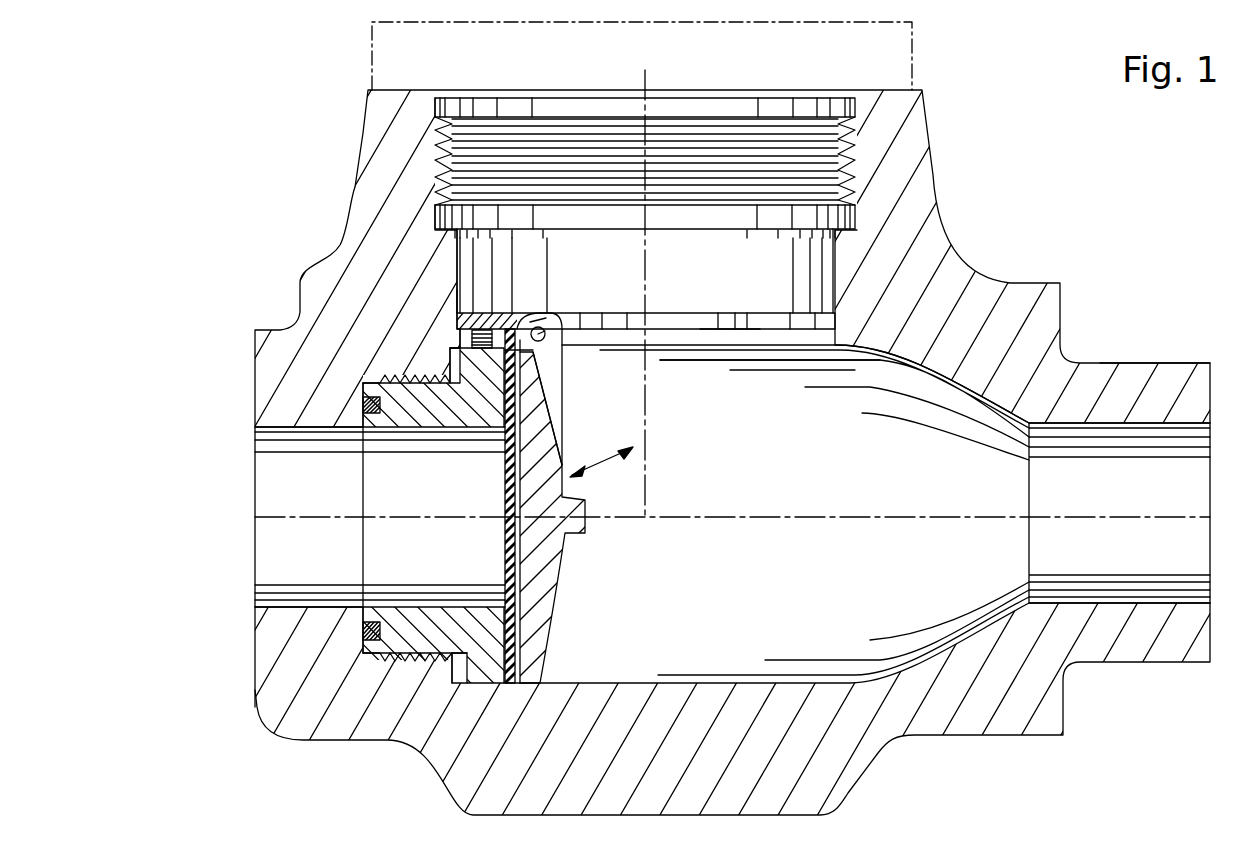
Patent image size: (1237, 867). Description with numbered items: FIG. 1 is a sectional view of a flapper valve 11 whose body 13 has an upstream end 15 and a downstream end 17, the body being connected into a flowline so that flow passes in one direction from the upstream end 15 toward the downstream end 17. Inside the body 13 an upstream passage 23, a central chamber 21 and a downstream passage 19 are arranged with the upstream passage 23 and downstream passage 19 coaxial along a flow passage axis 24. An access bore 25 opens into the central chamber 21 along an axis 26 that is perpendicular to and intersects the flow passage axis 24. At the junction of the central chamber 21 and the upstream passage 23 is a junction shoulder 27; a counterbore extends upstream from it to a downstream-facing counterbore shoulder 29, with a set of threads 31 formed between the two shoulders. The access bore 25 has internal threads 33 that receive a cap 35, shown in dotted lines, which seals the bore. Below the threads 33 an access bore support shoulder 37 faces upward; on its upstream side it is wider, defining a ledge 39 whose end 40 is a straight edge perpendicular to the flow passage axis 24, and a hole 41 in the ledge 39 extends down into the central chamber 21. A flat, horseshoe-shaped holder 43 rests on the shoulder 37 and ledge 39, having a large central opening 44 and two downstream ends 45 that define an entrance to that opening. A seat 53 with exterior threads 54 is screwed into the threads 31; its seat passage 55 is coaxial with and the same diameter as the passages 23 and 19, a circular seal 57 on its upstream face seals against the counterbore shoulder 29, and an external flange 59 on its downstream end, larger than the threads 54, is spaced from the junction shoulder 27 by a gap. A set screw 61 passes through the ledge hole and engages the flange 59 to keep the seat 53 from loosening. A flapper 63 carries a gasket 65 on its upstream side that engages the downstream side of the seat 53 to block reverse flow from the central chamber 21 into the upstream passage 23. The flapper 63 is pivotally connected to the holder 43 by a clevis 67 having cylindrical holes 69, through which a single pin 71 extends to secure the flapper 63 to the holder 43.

The flapper valve 11 is at (1030, 208).
The body 13 is at (962, 280).
The upstream end 15 is at (257, 712).
The downstream end 17 is at (1156, 362).
The downstream passage 19 is at (1146, 500).
The central chamber 21 is at (893, 475).
The upstream passage 23 is at (320, 505).
The flow passage axis 24 is at (1053, 514).
The access bore 25 is at (741, 280).
The access bore axis 26 is at (647, 427).
The junction shoulder 27 is at (456, 320).
The counterbore shoulder 29 is at (377, 656).
The threads 31 is at (515, 620).
The internal threads 33 is at (440, 232).
The cap 35 is at (913, 32).
The access bore support shoulder 37 is at (817, 317).
The ledge 39 is at (467, 295).
The end of ledge 40 is at (546, 318).
The hole 41 is at (457, 265).
The holder 43 is at (457, 245).
The central opening 44 is at (748, 317).
The downstream ends 45 is at (858, 290).
The seat 53 is at (417, 622).
The exterior threads 54 is at (420, 670).
The seat passage 55 is at (485, 505).
The circular seal 57 is at (381, 410).
The external flange 59 is at (487, 667).
The set screw 61 is at (456, 362).
The flapper 63 is at (560, 585).
The gasket 65 is at (506, 563).
The clevis 67 is at (563, 378).
The cylindrical holes 69 is at (540, 328).
The pin 71 is at (542, 322).